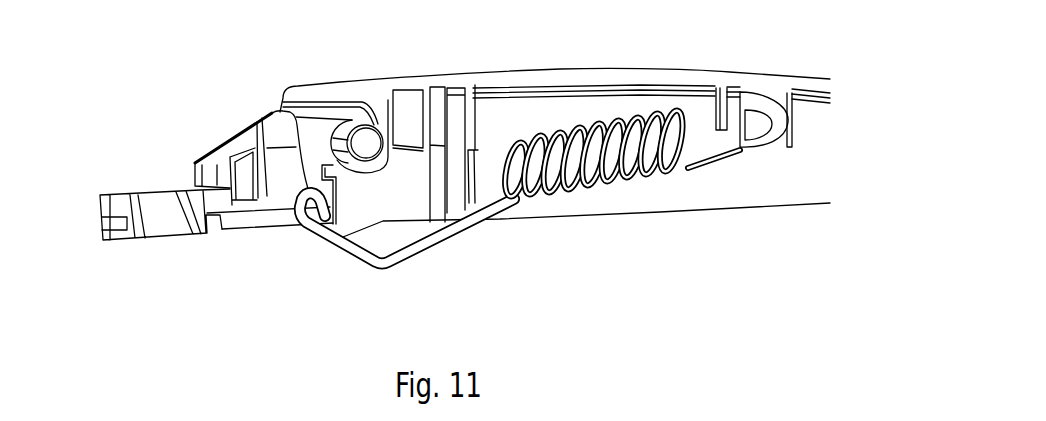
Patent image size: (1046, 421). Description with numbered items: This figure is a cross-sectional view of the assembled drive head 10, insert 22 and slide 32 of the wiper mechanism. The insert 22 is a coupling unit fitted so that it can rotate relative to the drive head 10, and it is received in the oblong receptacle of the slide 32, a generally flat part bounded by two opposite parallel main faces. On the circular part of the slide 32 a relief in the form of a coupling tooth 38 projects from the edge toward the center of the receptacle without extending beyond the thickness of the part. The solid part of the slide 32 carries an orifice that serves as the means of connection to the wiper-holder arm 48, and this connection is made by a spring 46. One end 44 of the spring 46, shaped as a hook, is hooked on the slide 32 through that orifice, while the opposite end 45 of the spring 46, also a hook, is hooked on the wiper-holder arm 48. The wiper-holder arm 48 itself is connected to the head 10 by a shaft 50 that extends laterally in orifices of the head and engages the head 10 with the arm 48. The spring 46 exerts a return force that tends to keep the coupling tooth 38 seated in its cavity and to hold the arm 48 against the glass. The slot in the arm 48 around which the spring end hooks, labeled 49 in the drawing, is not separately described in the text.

The drive head 10 is at (252, 139).
The insert 22 is at (117, 235).
The coupling tooth 38 is at (108, 223).
The slide 32 is at (217, 215).
The shaft 50 is at (366, 141).
The wiper-holder arm 48 is at (641, 70).
The slot 49 is at (757, 122).
The opposite end of the spring 45 is at (773, 144).
The spring 46 is at (596, 131).
The end of the spring 44 is at (413, 244).